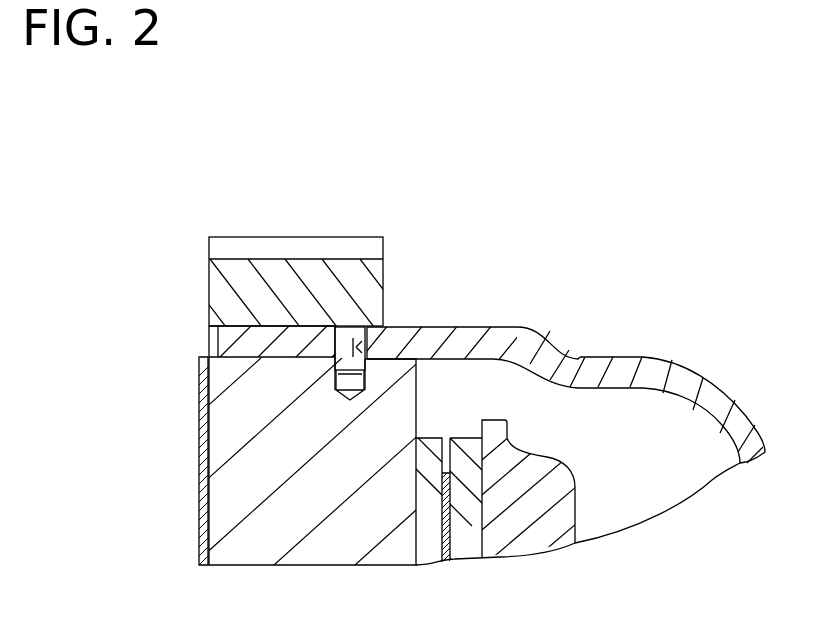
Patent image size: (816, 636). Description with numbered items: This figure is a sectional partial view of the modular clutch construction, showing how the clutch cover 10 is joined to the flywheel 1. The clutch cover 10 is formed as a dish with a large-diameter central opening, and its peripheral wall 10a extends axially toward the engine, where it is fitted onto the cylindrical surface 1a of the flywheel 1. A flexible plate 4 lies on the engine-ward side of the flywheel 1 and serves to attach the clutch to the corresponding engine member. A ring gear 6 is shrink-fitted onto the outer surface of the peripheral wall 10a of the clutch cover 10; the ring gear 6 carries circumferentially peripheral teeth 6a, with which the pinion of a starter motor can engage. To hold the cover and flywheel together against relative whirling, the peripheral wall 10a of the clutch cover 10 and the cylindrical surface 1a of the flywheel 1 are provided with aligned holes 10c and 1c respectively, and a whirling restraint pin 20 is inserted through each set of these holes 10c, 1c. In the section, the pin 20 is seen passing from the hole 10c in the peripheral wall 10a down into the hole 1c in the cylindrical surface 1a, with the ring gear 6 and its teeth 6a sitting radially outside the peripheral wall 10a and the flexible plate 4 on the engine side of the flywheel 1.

The flywheel 1 is at (235, 497).
The cylindrical surface 1a is at (273, 357).
The hole 1c is at (336, 381).
The flexible plate 4 is at (201, 437).
The ring gear 6 is at (220, 285).
The peripheral teeth 6a is at (280, 246).
The clutch cover 10 is at (584, 357).
The peripheral wall 10a is at (405, 332).
The hole 10c is at (437, 330).
The whirling restraint pin 20 is at (351, 345).